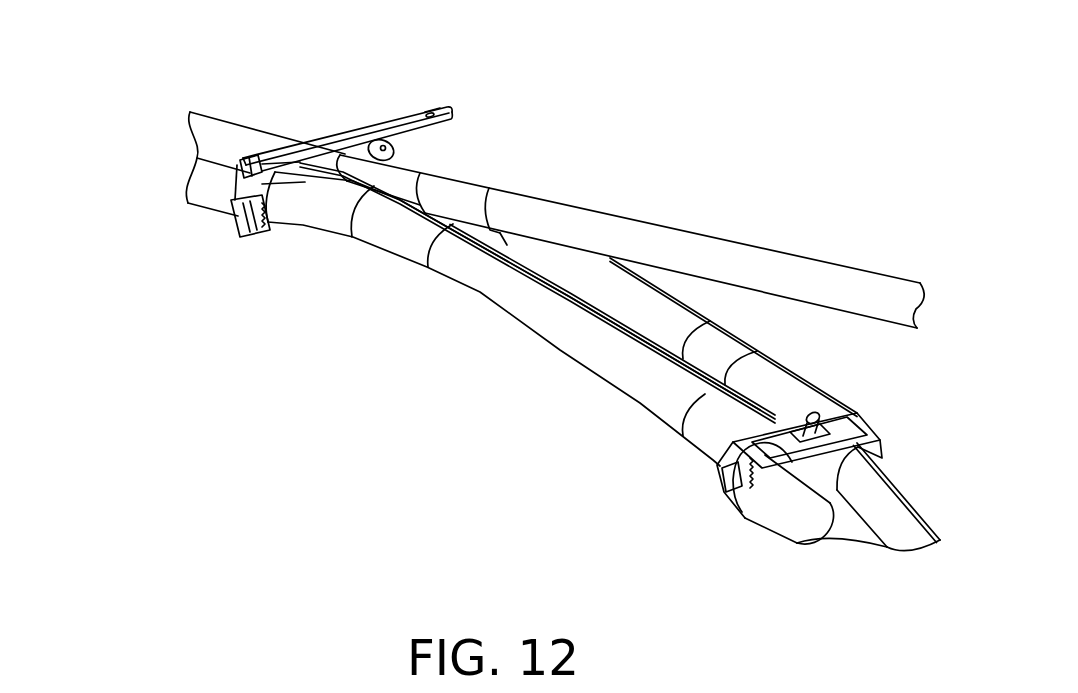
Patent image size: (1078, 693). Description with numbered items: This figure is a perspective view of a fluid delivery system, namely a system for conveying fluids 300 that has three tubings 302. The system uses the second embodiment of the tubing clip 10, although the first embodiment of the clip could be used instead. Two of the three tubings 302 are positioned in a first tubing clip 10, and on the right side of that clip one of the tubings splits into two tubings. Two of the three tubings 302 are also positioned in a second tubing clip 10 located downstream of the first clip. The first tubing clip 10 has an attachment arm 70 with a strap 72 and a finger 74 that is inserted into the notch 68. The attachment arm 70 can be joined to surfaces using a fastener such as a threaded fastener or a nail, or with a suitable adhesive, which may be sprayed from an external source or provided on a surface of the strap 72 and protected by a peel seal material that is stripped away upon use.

The system for conveying fluids 300 is at (133, 122).
The tubings 302 is at (708, 230).
The tubing clip 10 is at (325, 108).
The strap 72 is at (281, 127).
The attachment arm 70 is at (430, 104).
The finger 74 is at (221, 183).
The notch 68 is at (235, 214).